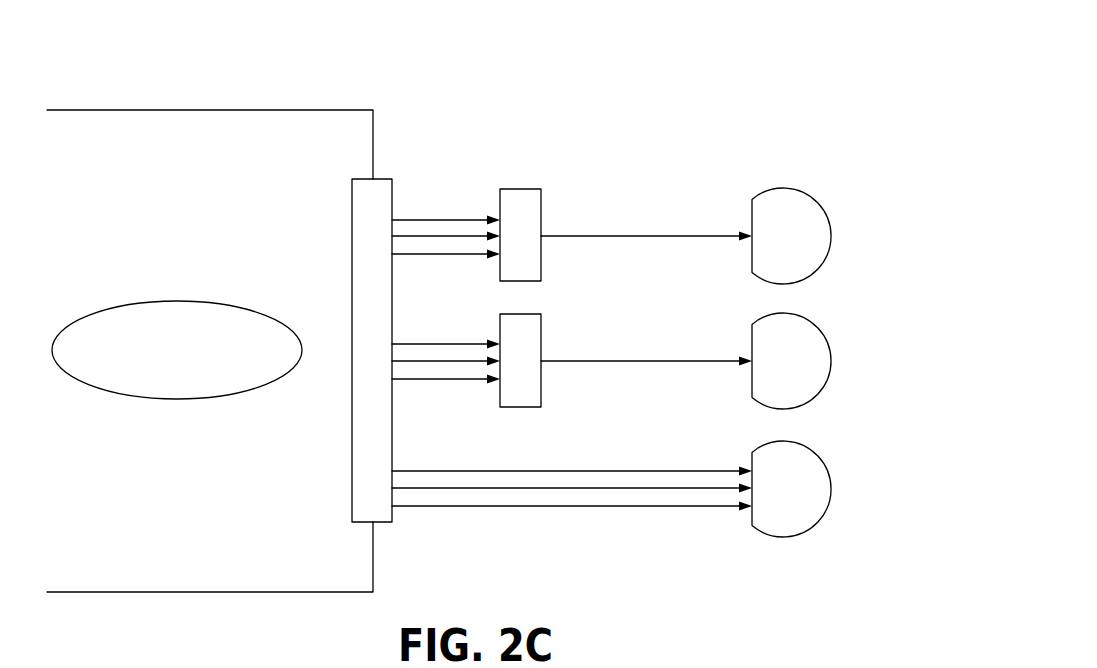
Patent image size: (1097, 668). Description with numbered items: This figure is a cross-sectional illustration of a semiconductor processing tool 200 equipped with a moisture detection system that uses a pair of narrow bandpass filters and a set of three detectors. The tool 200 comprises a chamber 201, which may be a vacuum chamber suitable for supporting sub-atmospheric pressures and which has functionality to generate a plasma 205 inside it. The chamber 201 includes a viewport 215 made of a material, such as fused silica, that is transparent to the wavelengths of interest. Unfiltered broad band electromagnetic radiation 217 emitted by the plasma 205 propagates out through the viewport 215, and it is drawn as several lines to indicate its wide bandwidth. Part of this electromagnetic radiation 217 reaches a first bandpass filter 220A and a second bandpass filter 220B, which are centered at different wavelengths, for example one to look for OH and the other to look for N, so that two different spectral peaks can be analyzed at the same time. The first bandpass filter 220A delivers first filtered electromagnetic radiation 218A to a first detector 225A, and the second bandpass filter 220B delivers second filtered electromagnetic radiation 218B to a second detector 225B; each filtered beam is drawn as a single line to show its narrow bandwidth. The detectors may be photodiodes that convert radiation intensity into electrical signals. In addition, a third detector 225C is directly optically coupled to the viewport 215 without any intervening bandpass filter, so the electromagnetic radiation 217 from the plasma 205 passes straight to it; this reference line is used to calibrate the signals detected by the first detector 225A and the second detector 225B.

The semiconductor processing tool 200 is at (705, 53).
The chamber 201 is at (224, 110).
The plasma 205 is at (146, 314).
The viewport 215 is at (380, 187).
The electromagnetic radiation 217 is at (433, 219).
The first filtered electromagnetic radiation 218A is at (627, 235).
The second filtered electromagnetic radiation 218B is at (627, 360).
The first bandpass filter 220A is at (522, 196).
The second bandpass filter 220B is at (532, 335).
The first detector 225A is at (802, 209).
The second detector 225B is at (802, 342).
The third detector 225C is at (802, 466).